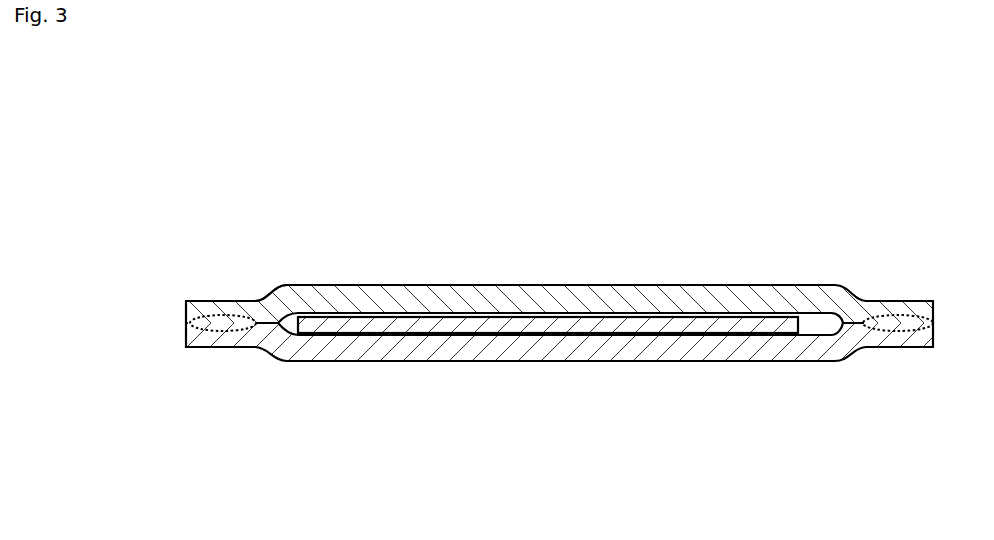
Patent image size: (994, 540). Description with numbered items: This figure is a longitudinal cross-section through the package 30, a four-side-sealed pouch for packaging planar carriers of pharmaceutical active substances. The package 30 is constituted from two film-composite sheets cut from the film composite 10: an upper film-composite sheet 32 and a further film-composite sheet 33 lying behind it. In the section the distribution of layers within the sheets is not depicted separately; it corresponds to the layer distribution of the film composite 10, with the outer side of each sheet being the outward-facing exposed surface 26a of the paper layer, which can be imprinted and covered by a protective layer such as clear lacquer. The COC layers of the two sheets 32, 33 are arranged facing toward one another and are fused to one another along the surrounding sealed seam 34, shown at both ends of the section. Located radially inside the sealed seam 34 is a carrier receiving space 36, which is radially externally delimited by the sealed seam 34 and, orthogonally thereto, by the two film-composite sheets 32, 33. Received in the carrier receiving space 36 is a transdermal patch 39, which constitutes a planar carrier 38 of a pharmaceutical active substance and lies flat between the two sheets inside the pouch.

The package 30 is at (221, 182).
The film composite 10 is at (648, 297).
The film-composite sheet 32 is at (487, 282).
The film-composite sheet 33 is at (497, 368).
The outward-facing exposed surface 26a is at (399, 281).
The carrier receiving space 36 is at (288, 321).
The sealed seam 34 is at (210, 324).
The planar carrier 38 is at (562, 291).
The transdermal patch 39 is at (556, 328).